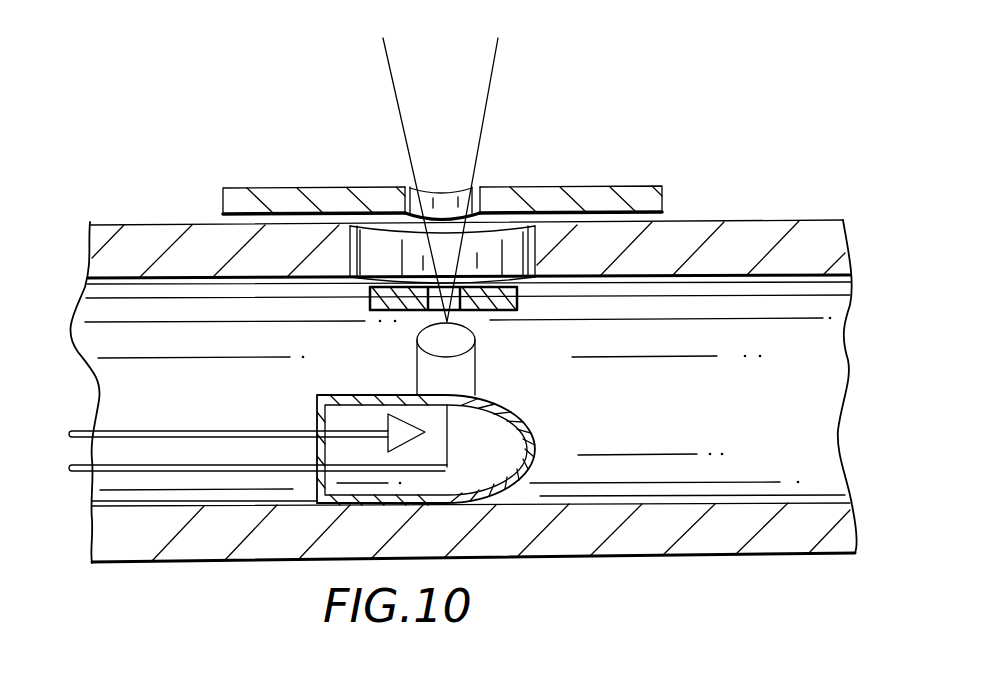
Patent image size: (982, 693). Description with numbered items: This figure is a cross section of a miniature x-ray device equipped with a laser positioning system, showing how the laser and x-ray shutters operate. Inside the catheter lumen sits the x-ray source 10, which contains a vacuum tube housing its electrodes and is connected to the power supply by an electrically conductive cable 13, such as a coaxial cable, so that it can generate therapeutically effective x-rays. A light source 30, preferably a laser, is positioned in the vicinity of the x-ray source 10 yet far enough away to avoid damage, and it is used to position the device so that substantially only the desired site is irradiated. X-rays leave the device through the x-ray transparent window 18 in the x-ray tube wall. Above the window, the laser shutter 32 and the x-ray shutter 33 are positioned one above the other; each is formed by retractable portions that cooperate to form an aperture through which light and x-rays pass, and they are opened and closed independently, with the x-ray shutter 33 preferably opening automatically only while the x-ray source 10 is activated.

The x-ray source 10 is at (513, 446).
The electrically conductive cable 13 is at (78, 440).
The x-ray transparent window 18 is at (510, 240).
The light source 30 is at (480, 386).
The laser shutter 32 is at (562, 188).
The x-ray shutter 33 is at (383, 287).